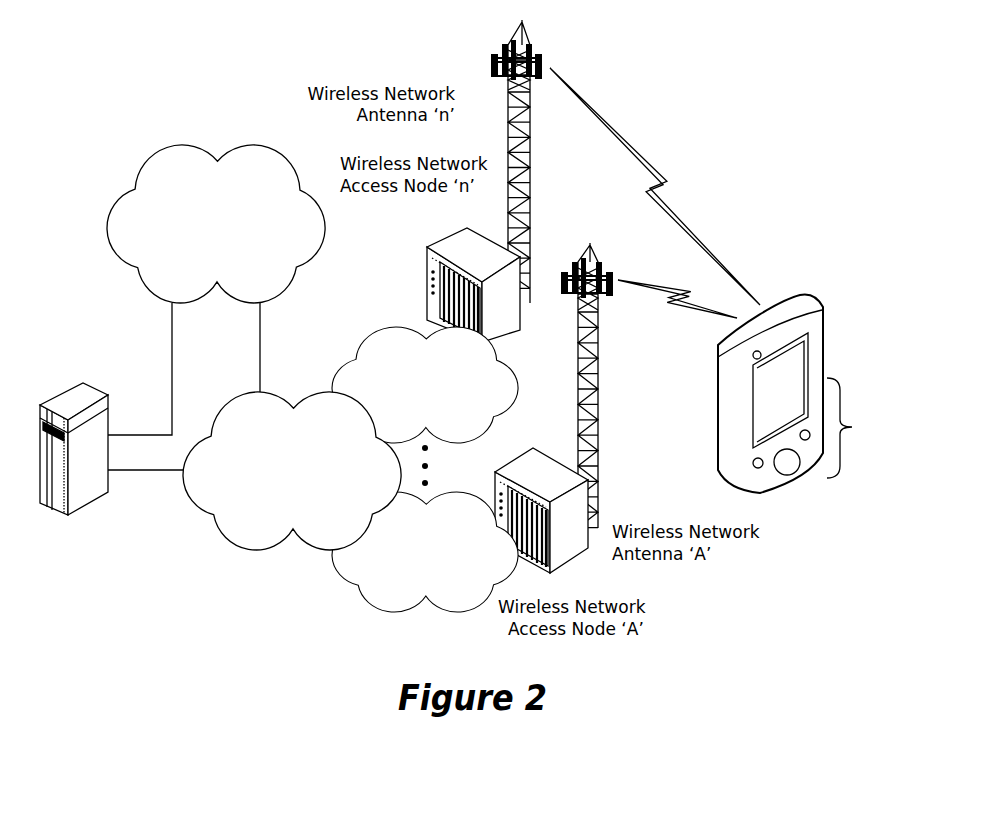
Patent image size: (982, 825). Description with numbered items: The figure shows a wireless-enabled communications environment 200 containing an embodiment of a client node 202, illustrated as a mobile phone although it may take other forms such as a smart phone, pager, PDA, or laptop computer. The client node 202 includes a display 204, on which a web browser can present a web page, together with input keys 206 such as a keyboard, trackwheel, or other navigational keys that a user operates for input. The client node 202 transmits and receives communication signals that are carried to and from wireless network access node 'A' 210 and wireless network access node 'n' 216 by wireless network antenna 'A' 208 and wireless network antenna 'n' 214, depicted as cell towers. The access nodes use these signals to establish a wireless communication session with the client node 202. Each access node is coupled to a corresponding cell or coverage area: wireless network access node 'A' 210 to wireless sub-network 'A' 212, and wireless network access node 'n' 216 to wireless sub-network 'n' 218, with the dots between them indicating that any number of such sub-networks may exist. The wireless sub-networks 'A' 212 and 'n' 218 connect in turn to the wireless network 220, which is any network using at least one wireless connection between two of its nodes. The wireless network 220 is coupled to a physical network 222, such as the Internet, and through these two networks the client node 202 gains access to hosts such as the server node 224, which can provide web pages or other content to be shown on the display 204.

The wireless network environment 200 is at (260, 110).
The client node 202 is at (796, 430).
The display 204 is at (797, 373).
The input keys 206 is at (852, 427).
The wireless network antenna 'A' 208 is at (600, 480).
The wireless network access node 'A' 210 is at (560, 568).
The wireless sub-network 'A' 212 is at (425, 552).
The wireless network antenna 'n' 214 is at (506, 135).
The wireless network access node 'n' 216 is at (458, 232).
The wireless sub-network 'n' 218 is at (425, 385).
The wireless network 220 is at (292, 471).
The physical network 222 is at (216, 224).
The server node 224 is at (75, 512).